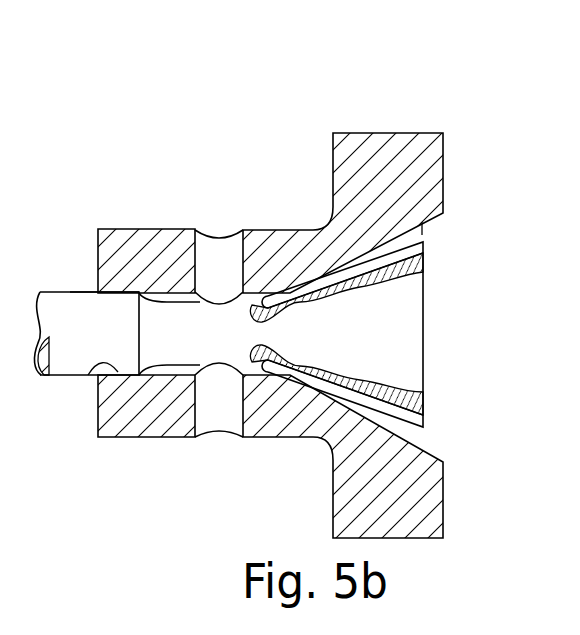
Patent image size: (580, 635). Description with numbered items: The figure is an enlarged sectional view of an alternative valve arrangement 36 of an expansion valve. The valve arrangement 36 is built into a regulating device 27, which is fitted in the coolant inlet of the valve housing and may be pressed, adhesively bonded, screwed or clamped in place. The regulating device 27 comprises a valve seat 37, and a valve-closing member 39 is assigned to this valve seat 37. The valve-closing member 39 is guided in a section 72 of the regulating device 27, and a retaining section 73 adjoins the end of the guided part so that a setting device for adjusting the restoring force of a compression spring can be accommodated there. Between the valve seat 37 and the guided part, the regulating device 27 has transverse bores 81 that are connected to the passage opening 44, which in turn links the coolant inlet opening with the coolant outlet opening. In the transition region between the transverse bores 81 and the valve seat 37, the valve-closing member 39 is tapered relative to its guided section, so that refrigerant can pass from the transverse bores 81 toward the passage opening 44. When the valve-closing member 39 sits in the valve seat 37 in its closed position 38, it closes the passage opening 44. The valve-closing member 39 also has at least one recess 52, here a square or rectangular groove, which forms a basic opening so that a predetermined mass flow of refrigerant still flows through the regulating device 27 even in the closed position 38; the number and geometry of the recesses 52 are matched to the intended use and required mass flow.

The regulating device 27 is at (392, 152).
The valve arrangement 36 is at (223, 147).
The valve seat 37 is at (427, 213).
The closed position 38 is at (288, 385).
The valve-closing member 39 is at (392, 350).
The passage opening 44 is at (260, 368).
The recess 52 is at (425, 247).
The section of the regulating device 72 is at (122, 365).
The retaining section 73 is at (83, 279).
The transverse bores 81 is at (222, 248).